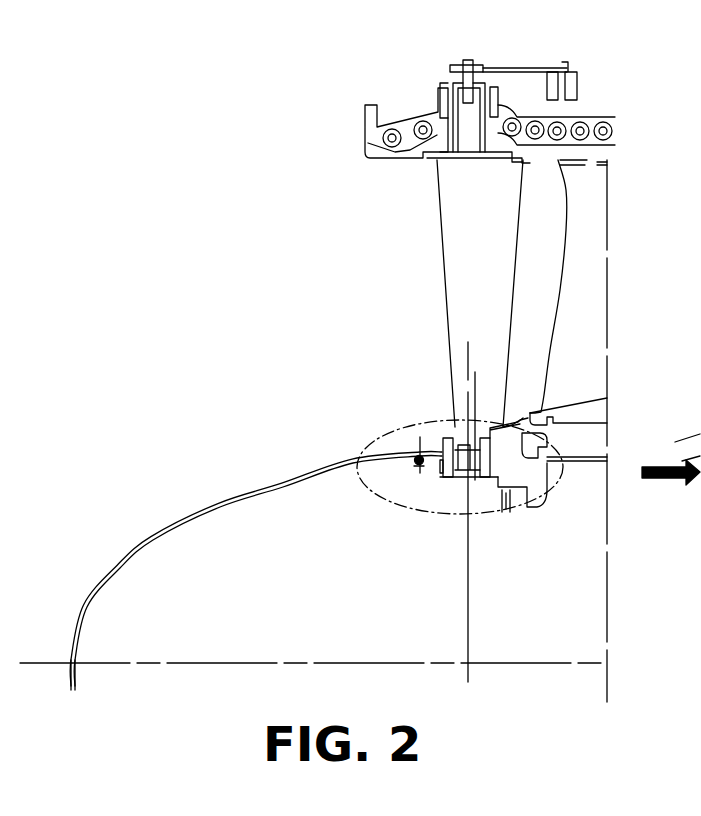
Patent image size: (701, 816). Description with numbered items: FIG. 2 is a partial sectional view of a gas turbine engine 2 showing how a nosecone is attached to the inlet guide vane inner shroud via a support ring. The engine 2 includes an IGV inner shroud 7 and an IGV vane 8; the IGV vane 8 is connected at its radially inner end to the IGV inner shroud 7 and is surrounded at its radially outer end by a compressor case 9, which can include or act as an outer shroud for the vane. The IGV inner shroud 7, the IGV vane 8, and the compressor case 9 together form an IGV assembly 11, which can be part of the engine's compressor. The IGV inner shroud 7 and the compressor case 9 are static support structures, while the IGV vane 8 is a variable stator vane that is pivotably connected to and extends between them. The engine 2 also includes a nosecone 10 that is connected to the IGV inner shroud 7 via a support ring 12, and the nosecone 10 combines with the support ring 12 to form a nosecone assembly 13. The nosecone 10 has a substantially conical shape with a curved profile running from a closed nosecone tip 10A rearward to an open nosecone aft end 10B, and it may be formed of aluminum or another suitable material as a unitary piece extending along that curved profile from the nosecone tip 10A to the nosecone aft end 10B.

The gas turbine engine 2 is at (298, 263).
The inlet guide vane inner shroud 7 is at (493, 467).
The IGV vane 8 is at (490, 275).
The compressor case 9 is at (612, 128).
The nosecone 10 is at (282, 485).
The nosecone tip 10A is at (70, 660).
The nosecone aft end 10B is at (430, 472).
The IGV assembly 11 is at (485, 482).
The support ring 12 is at (436, 443).
The nosecone assembly 13 is at (220, 505).